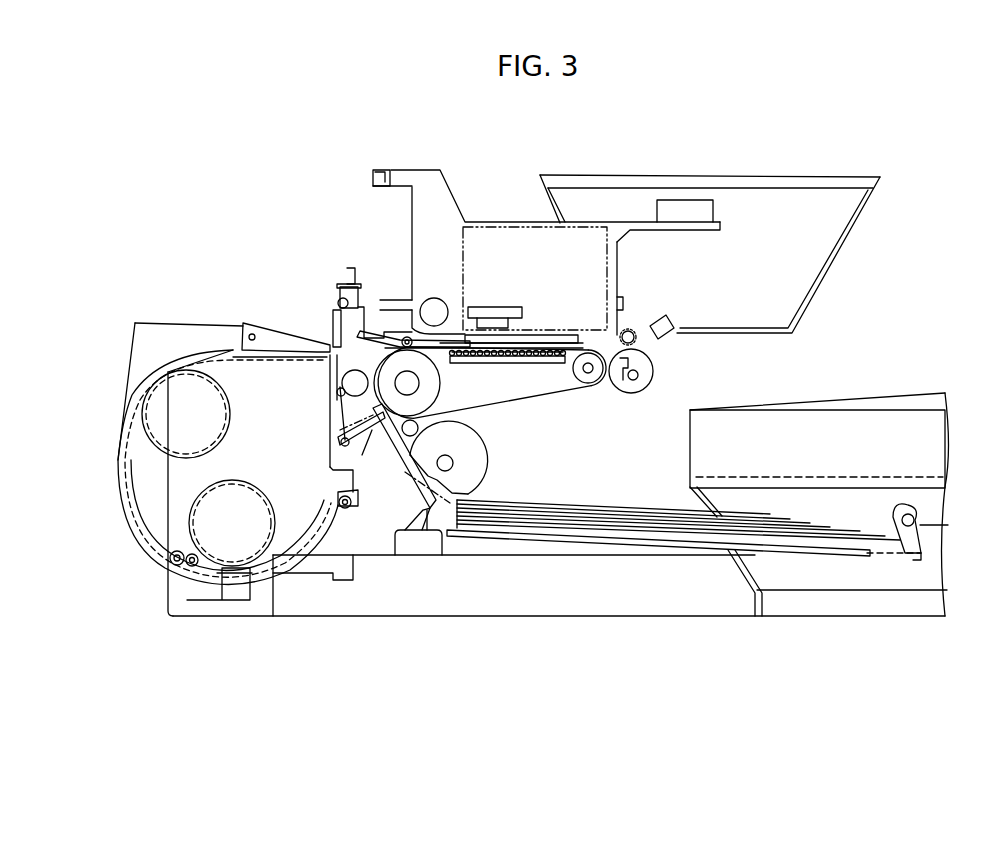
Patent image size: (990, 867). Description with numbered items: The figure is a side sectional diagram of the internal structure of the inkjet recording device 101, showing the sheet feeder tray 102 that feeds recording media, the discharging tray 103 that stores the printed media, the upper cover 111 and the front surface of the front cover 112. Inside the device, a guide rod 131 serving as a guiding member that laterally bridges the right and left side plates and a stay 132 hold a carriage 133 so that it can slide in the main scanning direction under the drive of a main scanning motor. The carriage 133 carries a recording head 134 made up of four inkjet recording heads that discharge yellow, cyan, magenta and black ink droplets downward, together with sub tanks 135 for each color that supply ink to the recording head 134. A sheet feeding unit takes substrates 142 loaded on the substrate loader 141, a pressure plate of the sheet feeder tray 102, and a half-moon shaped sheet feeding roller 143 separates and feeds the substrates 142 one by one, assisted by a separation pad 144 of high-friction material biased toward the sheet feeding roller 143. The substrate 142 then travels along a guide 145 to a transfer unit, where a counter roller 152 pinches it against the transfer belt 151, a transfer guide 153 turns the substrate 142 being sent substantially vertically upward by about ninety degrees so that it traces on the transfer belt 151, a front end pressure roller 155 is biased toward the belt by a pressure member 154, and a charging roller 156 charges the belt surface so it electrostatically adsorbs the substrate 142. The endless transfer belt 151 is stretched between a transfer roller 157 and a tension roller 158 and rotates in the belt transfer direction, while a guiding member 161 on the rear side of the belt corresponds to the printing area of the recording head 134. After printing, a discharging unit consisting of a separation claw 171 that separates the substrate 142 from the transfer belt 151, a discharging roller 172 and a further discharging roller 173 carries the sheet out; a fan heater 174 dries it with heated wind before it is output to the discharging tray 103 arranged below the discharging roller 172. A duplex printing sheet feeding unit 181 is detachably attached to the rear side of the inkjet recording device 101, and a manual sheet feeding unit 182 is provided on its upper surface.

The inkjet recording device 101 is at (711, 217).
The sheet feeder tray 102 is at (822, 605).
The discharging tray 103 is at (900, 420).
The upper cover 111 is at (788, 178).
The front surface of the front cover 112 is at (838, 262).
The guide rod 131 is at (440, 299).
The stay 132 is at (382, 170).
The carriage 133 is at (452, 196).
The recording head 134 is at (548, 335).
The sub tanks 135 is at (521, 240).
The substrate loader 141 is at (520, 540).
The substrate 142 is at (582, 528).
The sheet feeding roller 143 is at (485, 466).
The separation pad 144 is at (425, 556).
The guide 145 is at (380, 458).
The transfer belt 151 is at (495, 392).
The counter roller 152 is at (345, 384).
The transfer guide 153 is at (333, 338).
The pressure member 154 is at (357, 306).
The front end pressure roller 155 is at (403, 340).
The charging roller 156 is at (418, 431).
The transfer roller 157 is at (440, 380).
The tension roller 158 is at (590, 378).
The guiding member 161 is at (497, 365).
The separation claw 171 is at (630, 392).
The discharging roller 172 is at (653, 388).
The discharging roller 173 is at (632, 330).
The fan heater 174 is at (672, 322).
The duplex printing sheet feeding unit 181 is at (146, 352).
The manual sheet feeding unit 182 is at (244, 320).